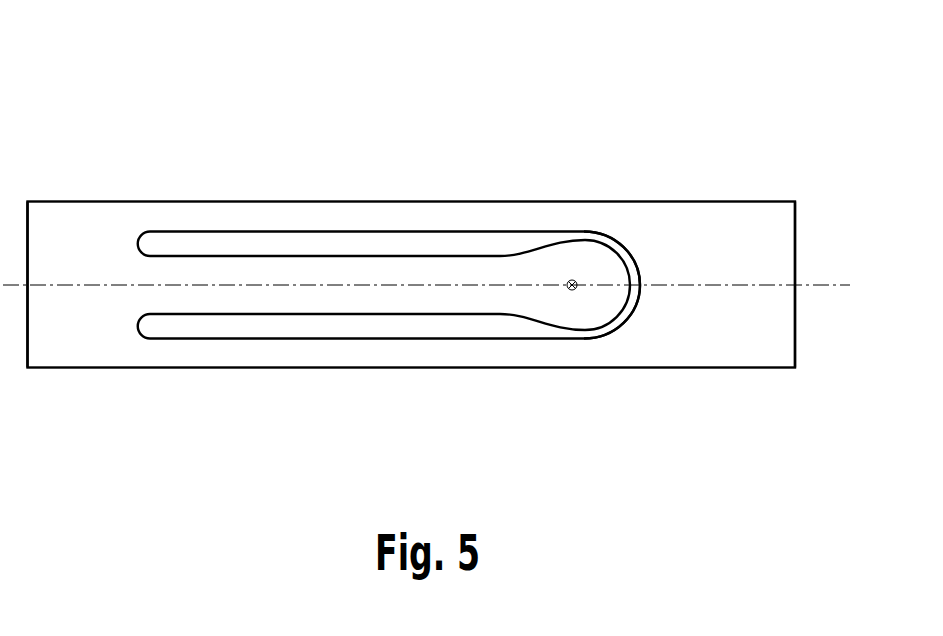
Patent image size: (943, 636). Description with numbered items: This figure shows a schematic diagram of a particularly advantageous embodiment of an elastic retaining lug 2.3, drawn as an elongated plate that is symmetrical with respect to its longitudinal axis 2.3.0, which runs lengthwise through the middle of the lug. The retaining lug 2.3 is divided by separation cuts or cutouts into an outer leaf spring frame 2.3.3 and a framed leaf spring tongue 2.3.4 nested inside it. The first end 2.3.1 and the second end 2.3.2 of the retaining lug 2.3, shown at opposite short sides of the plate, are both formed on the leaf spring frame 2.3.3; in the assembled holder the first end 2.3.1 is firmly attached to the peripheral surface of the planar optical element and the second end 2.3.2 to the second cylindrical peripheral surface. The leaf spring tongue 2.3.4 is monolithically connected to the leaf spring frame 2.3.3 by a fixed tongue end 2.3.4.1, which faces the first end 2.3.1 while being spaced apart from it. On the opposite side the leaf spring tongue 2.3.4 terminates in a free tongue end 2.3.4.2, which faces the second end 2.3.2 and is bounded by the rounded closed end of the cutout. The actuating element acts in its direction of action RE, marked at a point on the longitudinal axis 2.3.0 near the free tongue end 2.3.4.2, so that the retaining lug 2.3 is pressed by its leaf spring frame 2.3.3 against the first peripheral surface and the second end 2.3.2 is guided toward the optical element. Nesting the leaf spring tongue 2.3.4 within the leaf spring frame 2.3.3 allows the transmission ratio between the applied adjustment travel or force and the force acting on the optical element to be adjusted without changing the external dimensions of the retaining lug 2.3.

The retaining lug 2.3 is at (490, 84).
The longitudinal axis 2.3.0 is at (814, 282).
The first end 2.3.1 is at (792, 233).
The second end 2.3.2 is at (30, 265).
The leaf spring frame 2.3.3 is at (463, 218).
The leaf spring tongue 2.3.4 is at (370, 257).
The fixed tongue end 2.3.4.1 is at (138, 273).
The free tongue end 2.3.4.2 is at (620, 270).
The direction of action RE is at (572, 279).